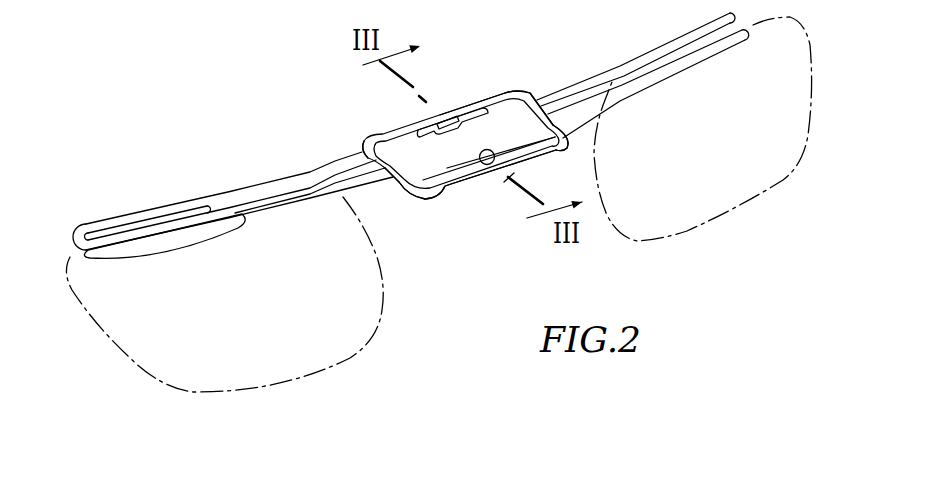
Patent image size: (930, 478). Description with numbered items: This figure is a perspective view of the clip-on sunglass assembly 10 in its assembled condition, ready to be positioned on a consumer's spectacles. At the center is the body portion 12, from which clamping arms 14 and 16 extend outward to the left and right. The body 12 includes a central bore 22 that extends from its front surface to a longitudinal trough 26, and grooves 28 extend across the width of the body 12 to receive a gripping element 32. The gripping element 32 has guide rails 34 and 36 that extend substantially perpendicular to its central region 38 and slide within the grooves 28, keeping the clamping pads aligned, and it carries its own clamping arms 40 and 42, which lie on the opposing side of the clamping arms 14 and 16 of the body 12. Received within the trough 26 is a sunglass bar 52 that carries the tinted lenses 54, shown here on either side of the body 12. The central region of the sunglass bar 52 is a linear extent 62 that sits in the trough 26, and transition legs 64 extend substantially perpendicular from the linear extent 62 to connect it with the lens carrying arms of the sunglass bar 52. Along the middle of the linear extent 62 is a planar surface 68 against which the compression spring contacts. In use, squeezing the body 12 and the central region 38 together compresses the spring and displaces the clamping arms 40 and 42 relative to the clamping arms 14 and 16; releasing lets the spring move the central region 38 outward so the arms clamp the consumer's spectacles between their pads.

The clip-on sunglass assembly 10 is at (304, 100).
The body portion 12 is at (403, 153).
The clamping arm 14 is at (264, 203).
The clamping arm 16 is at (605, 99).
The central bore 22 is at (492, 150).
The longitudinal trough 26 is at (497, 90).
The groove 28 is at (396, 182).
The gripping element 32 is at (442, 199).
The guide rail 34 is at (410, 200).
The guide rail 36 is at (571, 140).
The central region 38 is at (493, 178).
The clamping arm 40 is at (258, 181).
The clamping arm 42 is at (617, 62).
The sunglass bar 52 is at (311, 199).
The tinted lenses 54 is at (770, 192).
The linear extent 62 is at (366, 140).
The transition legs 64 is at (538, 98).
The planar surface 68 is at (432, 130).